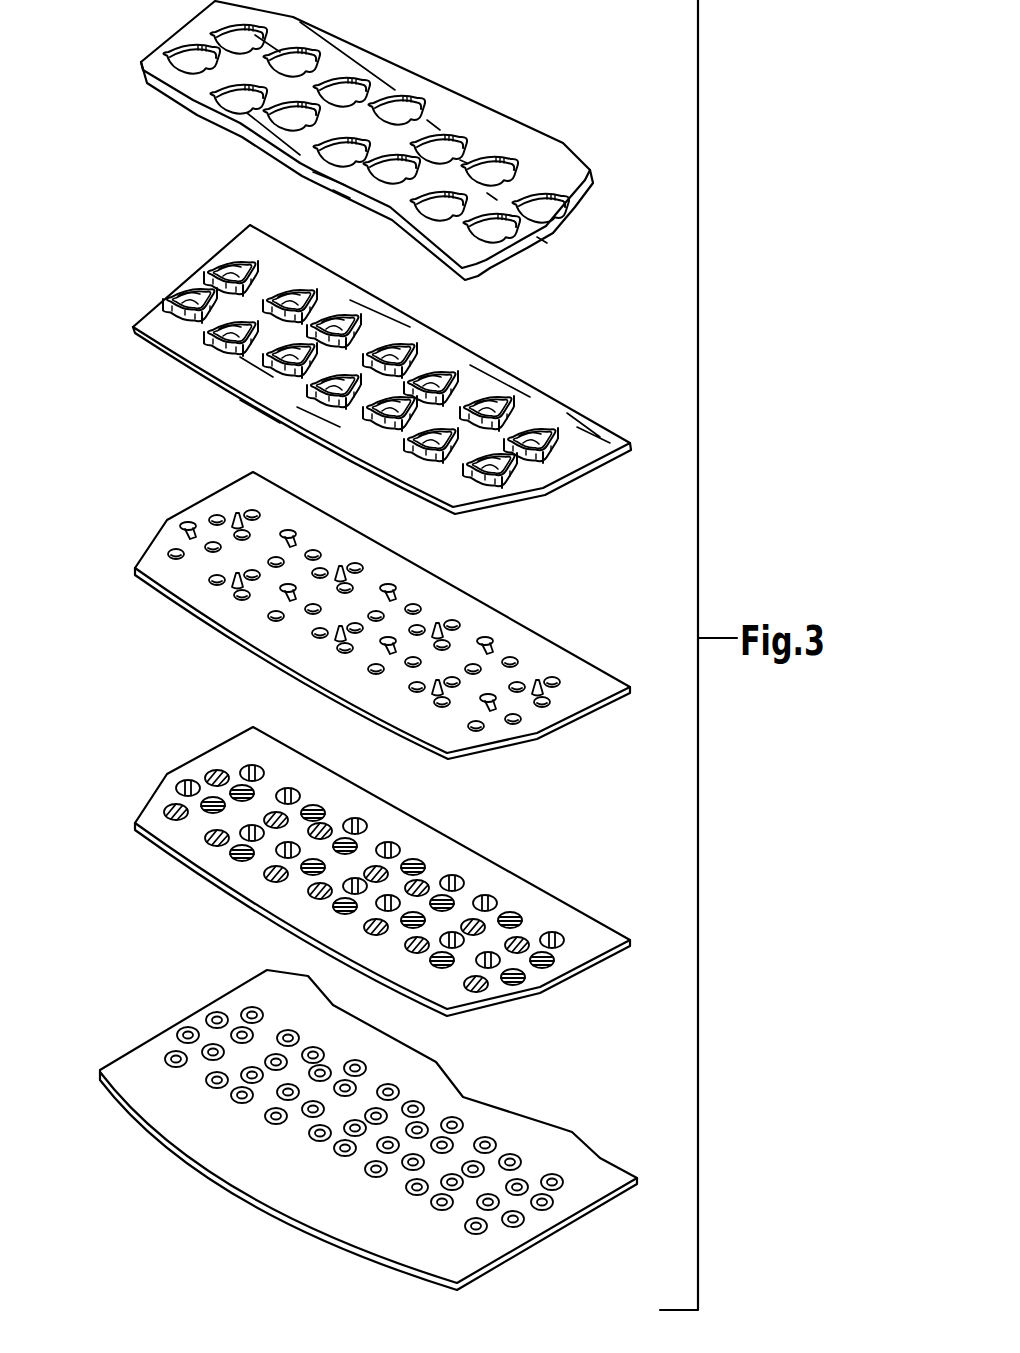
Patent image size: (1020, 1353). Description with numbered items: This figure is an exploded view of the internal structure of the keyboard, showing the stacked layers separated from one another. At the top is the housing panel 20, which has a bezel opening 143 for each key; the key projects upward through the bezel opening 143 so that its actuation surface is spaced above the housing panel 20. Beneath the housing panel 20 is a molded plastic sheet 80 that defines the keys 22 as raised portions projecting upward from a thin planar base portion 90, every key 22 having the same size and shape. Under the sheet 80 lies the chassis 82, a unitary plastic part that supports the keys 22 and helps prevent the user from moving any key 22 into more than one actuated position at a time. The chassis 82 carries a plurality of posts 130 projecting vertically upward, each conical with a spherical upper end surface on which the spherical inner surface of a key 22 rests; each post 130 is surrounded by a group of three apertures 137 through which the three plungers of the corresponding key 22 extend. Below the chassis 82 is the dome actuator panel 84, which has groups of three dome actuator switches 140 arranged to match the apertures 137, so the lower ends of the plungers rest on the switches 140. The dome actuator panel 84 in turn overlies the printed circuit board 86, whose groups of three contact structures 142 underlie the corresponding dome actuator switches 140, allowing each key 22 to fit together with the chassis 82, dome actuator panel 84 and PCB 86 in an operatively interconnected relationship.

The housing panel 20 is at (334, 140).
The bezel opening 143 is at (410, 92).
The keys 22 is at (204, 258).
The molded plastic sheet 80 is at (356, 346).
The thin planar base portion 90 is at (580, 421).
The chassis 82 is at (347, 615).
The posts 130 is at (492, 653).
The apertures 137 is at (219, 602).
The dome actuator panel 84 is at (341, 864).
The dome actuator switches 140 is at (208, 775).
The printed circuit board 86 is at (348, 1121).
The contact structures 142 is at (187, 1033).